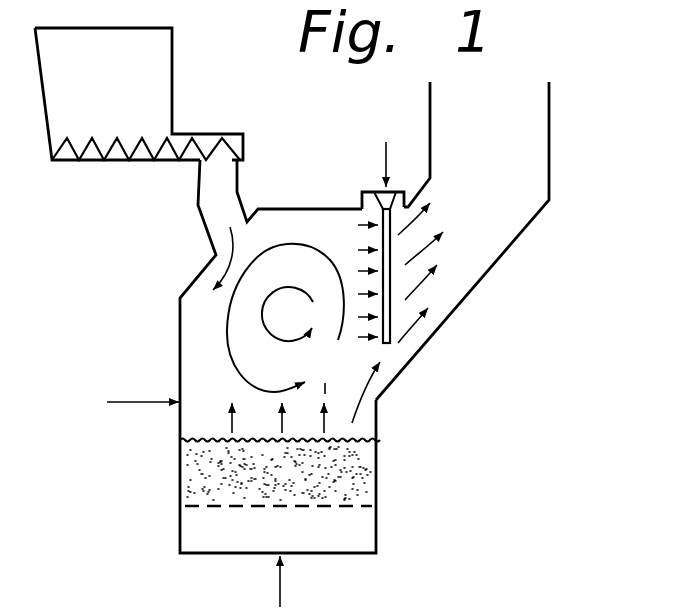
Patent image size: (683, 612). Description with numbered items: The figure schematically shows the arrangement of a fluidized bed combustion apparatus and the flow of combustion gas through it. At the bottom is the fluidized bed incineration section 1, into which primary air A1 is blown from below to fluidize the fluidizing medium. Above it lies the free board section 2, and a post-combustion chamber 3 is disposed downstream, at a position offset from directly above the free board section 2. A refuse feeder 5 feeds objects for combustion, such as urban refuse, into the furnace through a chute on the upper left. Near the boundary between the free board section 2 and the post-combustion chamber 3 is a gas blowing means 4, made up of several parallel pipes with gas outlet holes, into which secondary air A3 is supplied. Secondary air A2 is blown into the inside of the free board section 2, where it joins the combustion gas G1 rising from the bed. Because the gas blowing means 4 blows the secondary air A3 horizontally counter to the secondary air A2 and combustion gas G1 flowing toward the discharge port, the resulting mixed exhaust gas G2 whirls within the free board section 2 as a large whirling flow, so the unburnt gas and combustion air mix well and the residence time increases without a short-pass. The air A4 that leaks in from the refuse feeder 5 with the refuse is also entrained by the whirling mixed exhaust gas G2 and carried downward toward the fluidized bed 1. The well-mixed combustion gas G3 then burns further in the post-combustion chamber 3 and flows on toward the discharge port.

The fluidized bed incineration section 1 is at (362, 477).
The free board section 2 is at (185, 352).
The post-combustion chamber 3 is at (507, 222).
The gas blowing means 4 is at (393, 305).
The refuse feeder 5 is at (158, 75).
The primary air A1 is at (280, 590).
The secondary air A2 is at (121, 400).
The secondary air A3 is at (362, 218).
The leaked air A4 is at (226, 245).
The combustion gas G1 is at (214, 427).
The mixed exhaust gas G2 is at (214, 322).
The combustion gas G3 is at (451, 257).